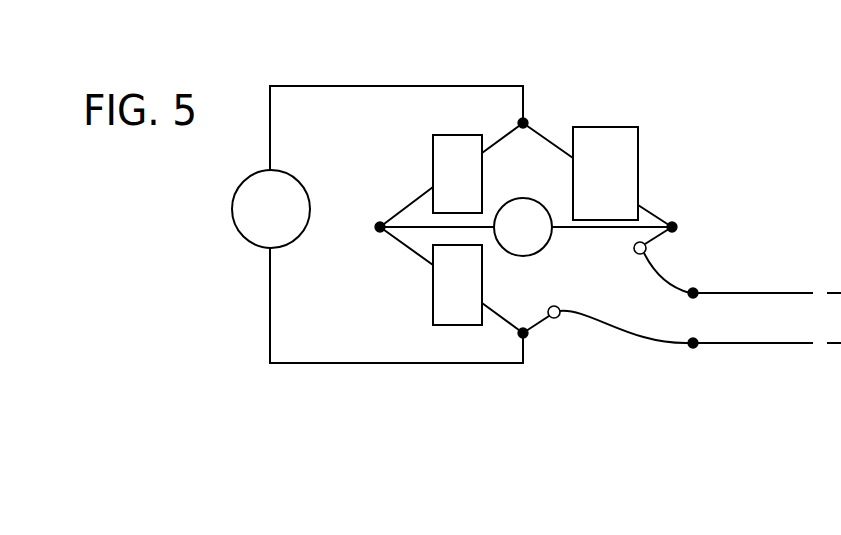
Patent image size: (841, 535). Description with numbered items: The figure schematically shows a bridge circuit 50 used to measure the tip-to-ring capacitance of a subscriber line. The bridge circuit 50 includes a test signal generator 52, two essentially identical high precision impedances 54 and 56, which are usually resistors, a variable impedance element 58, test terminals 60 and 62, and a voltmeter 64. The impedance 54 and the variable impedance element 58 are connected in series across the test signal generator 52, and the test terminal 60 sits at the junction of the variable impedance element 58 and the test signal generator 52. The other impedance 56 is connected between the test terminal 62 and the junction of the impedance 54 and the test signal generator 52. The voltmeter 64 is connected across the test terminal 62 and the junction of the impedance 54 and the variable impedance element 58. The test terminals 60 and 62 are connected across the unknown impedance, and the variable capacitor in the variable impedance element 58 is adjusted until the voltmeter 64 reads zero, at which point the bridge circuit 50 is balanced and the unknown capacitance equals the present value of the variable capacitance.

The bridge circuit 50 is at (412, 55).
The test signal generator 52 is at (545, 250).
The impedance 54 is at (432, 148).
The impedance 56 is at (433, 293).
The variable impedance element 58 is at (638, 145).
The test terminal 60 is at (648, 251).
The test terminal 62 is at (556, 318).
The voltmeter 64 is at (233, 220).